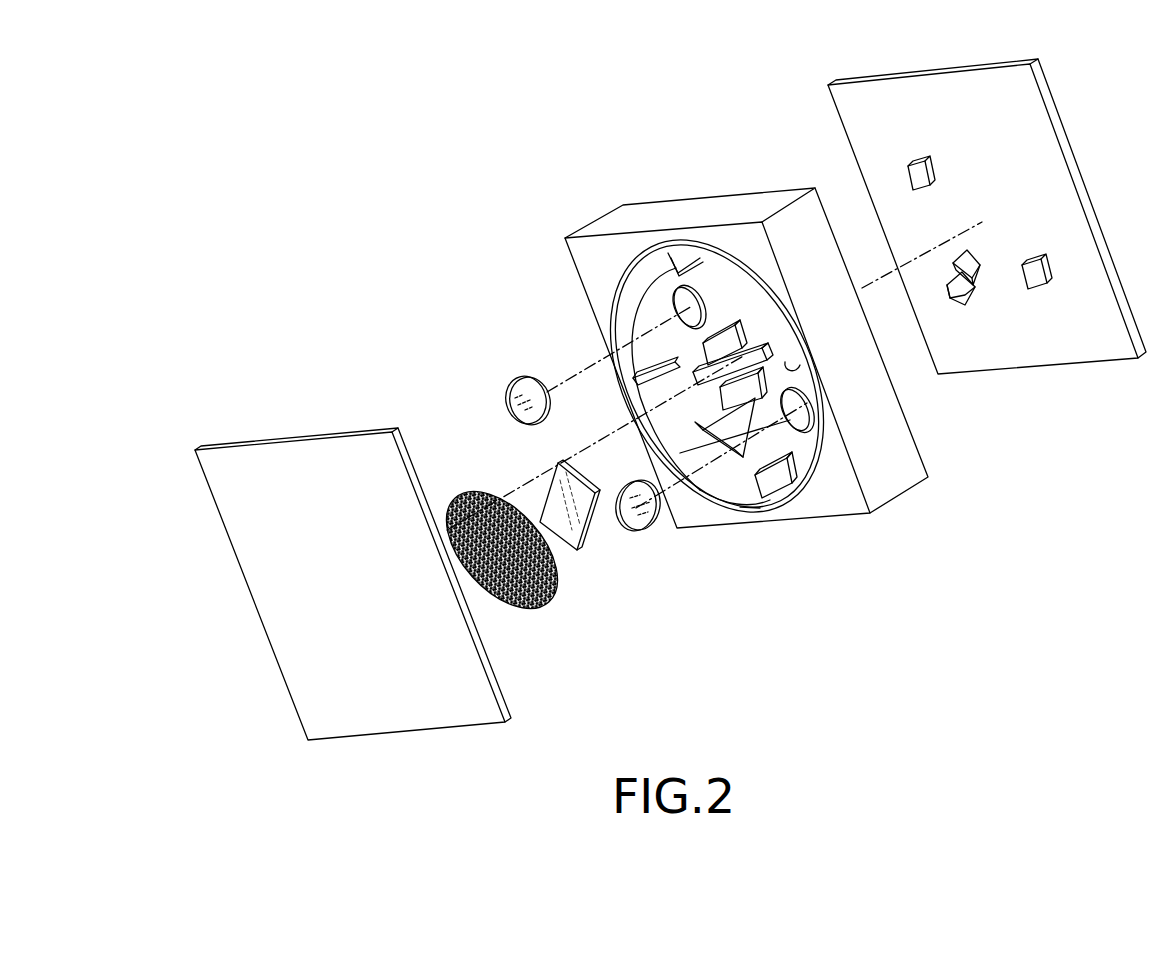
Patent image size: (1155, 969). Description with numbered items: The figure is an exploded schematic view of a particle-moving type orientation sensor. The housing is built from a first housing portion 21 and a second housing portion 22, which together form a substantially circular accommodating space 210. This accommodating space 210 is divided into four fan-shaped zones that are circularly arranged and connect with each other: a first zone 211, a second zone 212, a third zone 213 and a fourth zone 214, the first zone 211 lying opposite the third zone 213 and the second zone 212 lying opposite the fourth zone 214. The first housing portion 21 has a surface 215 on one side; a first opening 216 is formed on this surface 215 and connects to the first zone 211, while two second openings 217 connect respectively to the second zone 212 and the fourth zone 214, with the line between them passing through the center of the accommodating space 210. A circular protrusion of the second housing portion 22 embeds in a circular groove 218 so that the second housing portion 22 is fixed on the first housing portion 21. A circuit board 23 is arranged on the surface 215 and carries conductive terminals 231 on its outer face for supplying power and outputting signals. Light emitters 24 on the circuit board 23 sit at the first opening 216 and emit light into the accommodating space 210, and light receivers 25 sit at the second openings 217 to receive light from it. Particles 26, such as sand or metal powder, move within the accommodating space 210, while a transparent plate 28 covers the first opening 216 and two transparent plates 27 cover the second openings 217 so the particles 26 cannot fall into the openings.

The first housing portion 21 is at (643, 212).
The accommodating space 210 is at (633, 318).
The first zone 211 is at (728, 468).
The second zone 212 is at (658, 285).
The third zone 213 is at (733, 290).
The fourth zone 214 is at (797, 490).
The surface 215 is at (710, 197).
The first opening 216 is at (720, 412).
The second openings 217 is at (687, 298).
The circular groove 218 is at (745, 507).
The second housing portion 22 is at (272, 610).
The circuit board 23 is at (852, 108).
The conductive terminals 231 is at (1034, 61).
The light emitters 24 is at (953, 265).
The light receivers 25 is at (917, 175).
The particles 26 is at (522, 602).
The transparent plates 27 is at (505, 410).
The transparent plate 28 is at (563, 552).